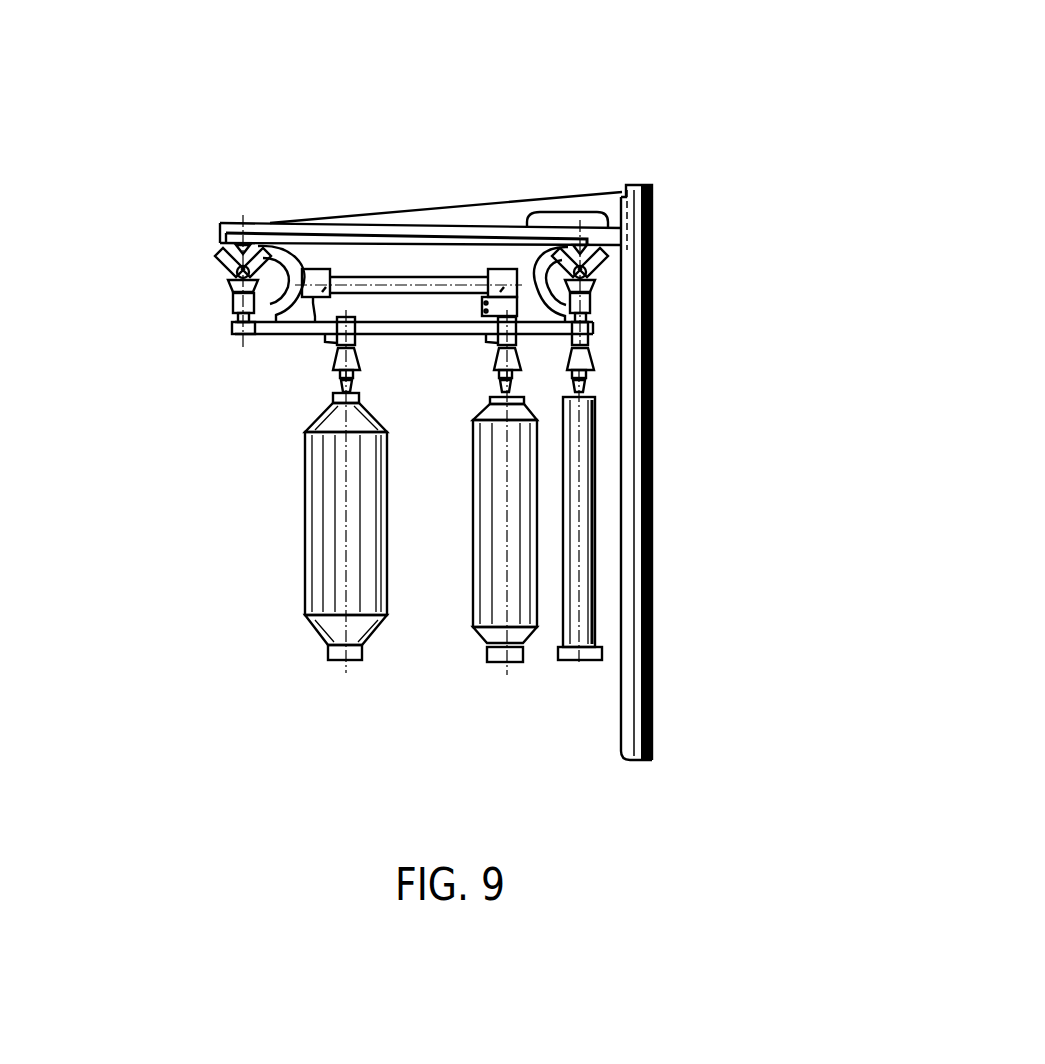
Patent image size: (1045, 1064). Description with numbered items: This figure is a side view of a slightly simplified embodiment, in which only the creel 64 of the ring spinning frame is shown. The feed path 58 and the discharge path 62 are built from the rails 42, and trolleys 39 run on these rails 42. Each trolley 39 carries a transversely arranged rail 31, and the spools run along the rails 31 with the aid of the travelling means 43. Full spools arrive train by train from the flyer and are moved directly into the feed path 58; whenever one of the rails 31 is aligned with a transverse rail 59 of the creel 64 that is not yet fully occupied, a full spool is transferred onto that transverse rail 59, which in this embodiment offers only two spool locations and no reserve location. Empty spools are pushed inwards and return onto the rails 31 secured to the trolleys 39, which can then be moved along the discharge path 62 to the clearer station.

The creel 64 is at (676, 200).
The feed path 58 is at (243, 270).
The rail 42 is at (225, 281).
The trolley 39 is at (216, 300).
The transversely arranged rail 31 is at (232, 326).
The transverse rail 59 is at (280, 328).
The discharge path 62 is at (603, 262).
The travelling means 43 is at (316, 358).